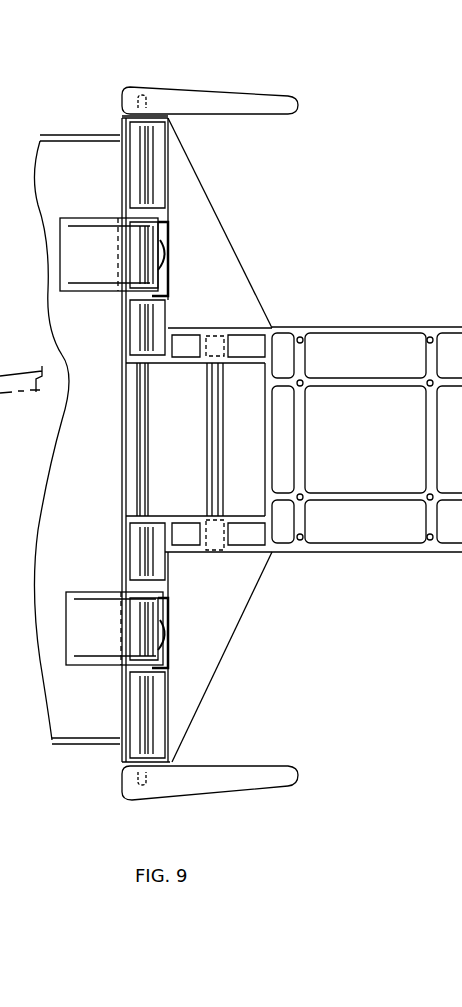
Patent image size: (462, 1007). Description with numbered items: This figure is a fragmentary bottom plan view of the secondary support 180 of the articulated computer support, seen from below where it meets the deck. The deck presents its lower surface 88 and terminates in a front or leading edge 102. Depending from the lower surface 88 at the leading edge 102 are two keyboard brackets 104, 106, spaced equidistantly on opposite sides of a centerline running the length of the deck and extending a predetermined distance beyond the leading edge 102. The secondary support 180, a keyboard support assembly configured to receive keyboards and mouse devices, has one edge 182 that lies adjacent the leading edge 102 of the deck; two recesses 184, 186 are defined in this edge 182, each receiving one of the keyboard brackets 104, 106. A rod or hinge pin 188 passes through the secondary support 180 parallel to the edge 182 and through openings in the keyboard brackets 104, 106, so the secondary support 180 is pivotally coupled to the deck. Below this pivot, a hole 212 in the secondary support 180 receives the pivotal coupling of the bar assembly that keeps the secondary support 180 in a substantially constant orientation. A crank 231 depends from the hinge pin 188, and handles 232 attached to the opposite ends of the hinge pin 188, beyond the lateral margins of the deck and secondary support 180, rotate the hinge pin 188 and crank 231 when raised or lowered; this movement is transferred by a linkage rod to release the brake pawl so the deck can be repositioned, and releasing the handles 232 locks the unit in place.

The lower surface 88 is at (92, 511).
The leading edge 102 is at (112, 275).
The keyboard bracket 104 is at (100, 264).
The keyboard bracket 106 is at (106, 646).
The secondary support 180 is at (275, 285).
The edge 182 is at (122, 118).
The recess 184 is at (168, 232).
The recess 186 is at (165, 650).
The hinge pin 188 is at (150, 388).
The hole 212 is at (215, 553).
The crank 231 is at (168, 272).
The handle 232 is at (198, 102).